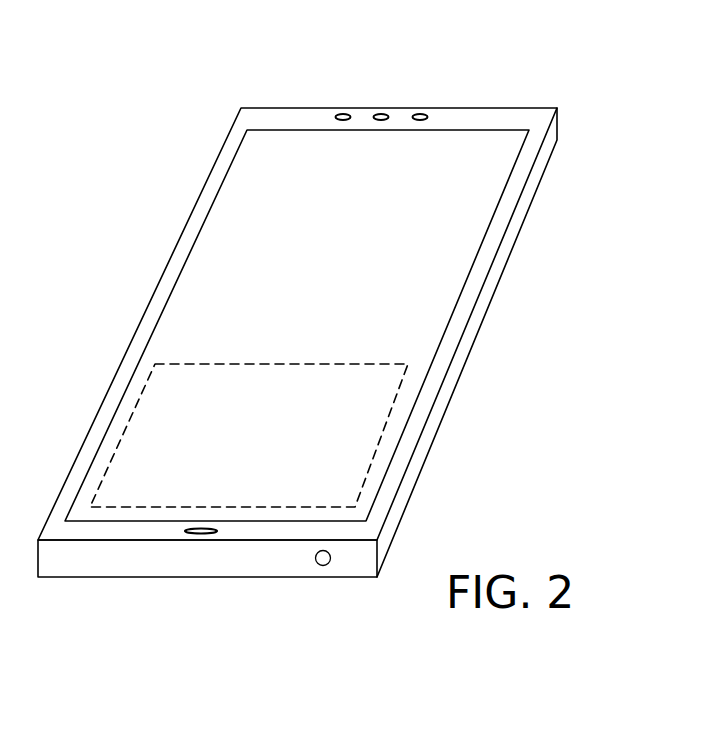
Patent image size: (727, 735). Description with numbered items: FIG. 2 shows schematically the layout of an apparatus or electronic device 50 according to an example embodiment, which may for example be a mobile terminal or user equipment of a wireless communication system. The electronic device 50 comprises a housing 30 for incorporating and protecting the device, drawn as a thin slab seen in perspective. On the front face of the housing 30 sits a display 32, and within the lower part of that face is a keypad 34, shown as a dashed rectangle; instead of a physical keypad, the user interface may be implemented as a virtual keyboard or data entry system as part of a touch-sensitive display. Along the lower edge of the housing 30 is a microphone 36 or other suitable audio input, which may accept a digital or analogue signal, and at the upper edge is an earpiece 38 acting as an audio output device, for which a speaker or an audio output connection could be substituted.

The electronic device 50 is at (588, 66).
The housing 30 is at (261, 107).
The display 32 is at (445, 248).
The keypad 34 is at (360, 455).
The microphone 36 is at (208, 534).
The earpiece 38 is at (380, 113).